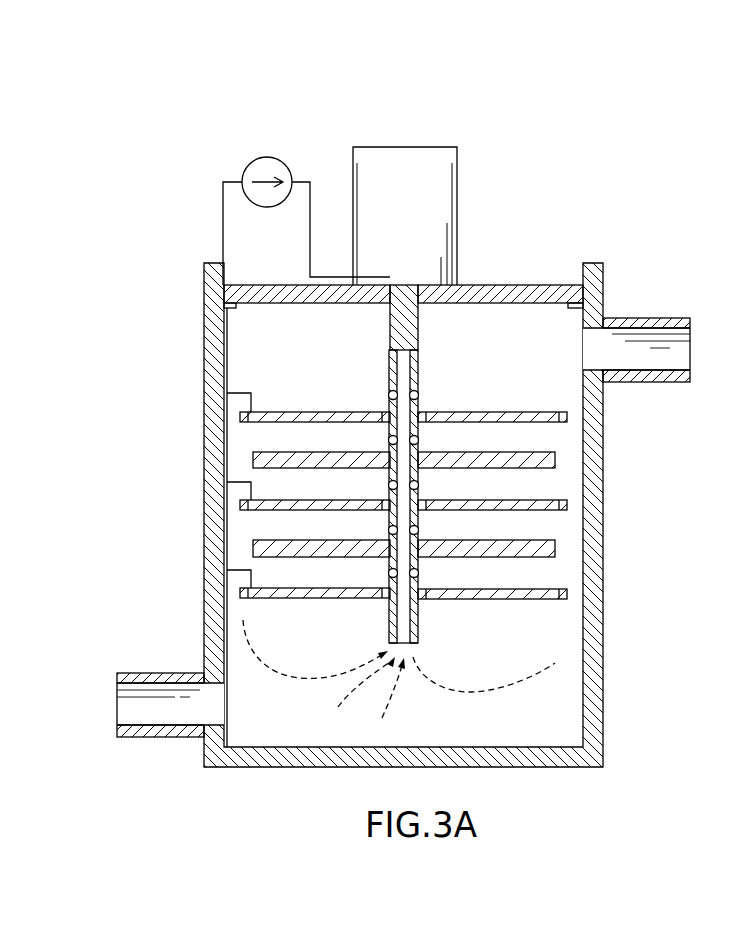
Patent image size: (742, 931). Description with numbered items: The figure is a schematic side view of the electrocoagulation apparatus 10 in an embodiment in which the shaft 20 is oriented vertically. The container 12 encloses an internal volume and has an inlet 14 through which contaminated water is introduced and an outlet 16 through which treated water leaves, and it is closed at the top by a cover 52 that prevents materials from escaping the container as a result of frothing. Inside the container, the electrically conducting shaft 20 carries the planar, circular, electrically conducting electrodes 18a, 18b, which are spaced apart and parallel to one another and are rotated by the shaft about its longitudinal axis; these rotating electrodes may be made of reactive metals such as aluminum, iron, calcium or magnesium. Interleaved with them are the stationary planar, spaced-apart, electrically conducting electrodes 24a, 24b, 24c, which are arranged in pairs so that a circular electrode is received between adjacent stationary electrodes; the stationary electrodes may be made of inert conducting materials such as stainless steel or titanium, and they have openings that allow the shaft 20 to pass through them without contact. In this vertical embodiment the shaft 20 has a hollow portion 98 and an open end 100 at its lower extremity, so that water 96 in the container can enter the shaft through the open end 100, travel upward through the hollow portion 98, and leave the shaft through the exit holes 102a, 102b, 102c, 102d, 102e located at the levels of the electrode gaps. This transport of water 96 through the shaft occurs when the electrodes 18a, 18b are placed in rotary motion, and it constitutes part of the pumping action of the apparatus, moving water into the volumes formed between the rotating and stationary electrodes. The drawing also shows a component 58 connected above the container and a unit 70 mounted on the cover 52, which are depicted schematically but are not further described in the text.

The electrocoagulation apparatus 10 is at (443, 443).
The container 12 is at (610, 541).
The inlet port 14 is at (740, 350).
The outlet port 16 is at (127, 707).
The circular electrode 18a is at (542, 557).
The circular electrode 18b is at (548, 451).
The shaft 20 is at (435, 468).
The stationary electrode 24a is at (548, 600).
The stationary electrode 24b is at (548, 500).
The stationary electrode 24c is at (548, 411).
The cover 52 is at (515, 285).
The pump 58 is at (251, 152).
The controller 70 is at (415, 218).
The water 96 is at (478, 692).
The hollow portion 98 is at (390, 617).
The open end 100 is at (410, 650).
The exit hole 102a is at (419, 394).
The exit hole 102b is at (419, 440).
The exit hole 102c is at (419, 485).
The exit hole 102d is at (419, 530).
The exit hole 102e is at (419, 573).